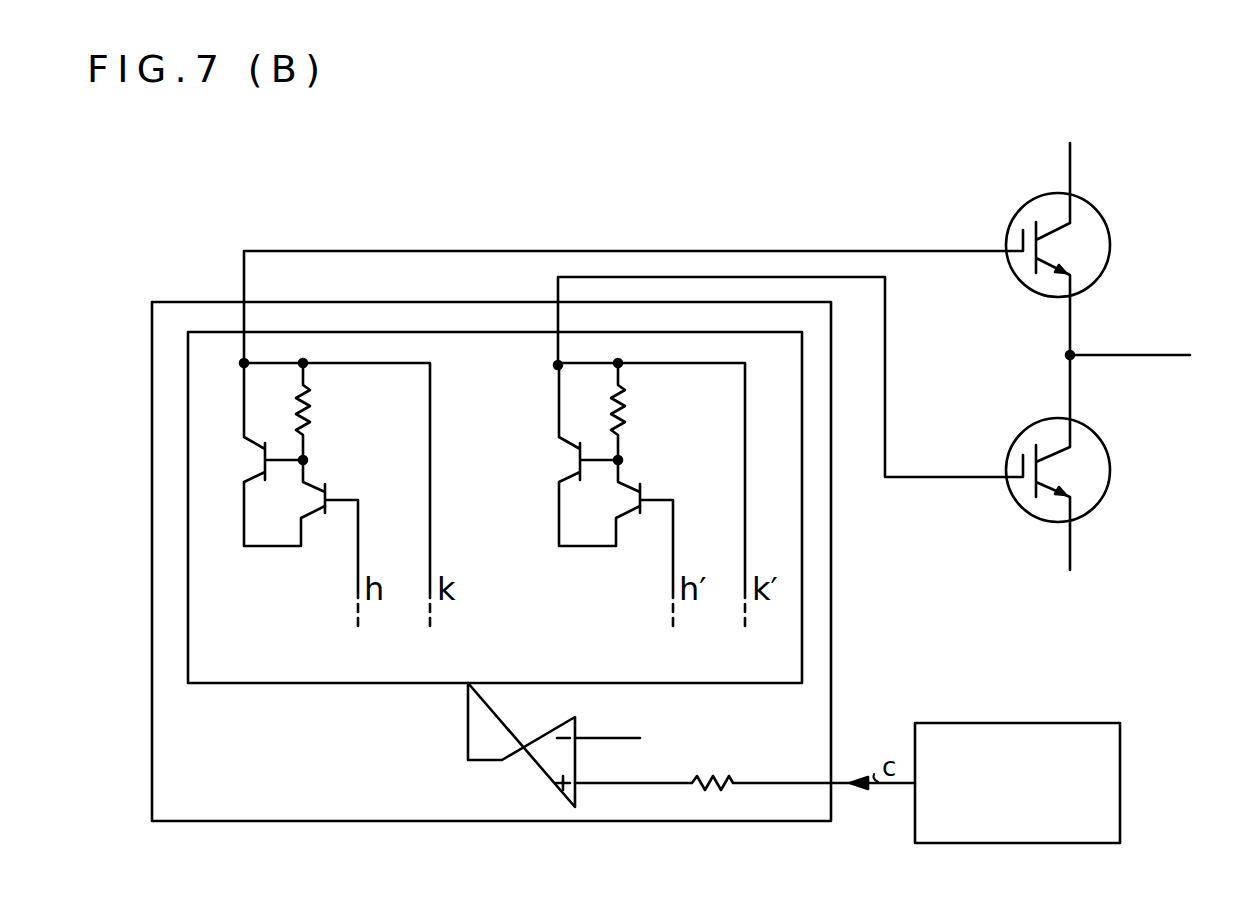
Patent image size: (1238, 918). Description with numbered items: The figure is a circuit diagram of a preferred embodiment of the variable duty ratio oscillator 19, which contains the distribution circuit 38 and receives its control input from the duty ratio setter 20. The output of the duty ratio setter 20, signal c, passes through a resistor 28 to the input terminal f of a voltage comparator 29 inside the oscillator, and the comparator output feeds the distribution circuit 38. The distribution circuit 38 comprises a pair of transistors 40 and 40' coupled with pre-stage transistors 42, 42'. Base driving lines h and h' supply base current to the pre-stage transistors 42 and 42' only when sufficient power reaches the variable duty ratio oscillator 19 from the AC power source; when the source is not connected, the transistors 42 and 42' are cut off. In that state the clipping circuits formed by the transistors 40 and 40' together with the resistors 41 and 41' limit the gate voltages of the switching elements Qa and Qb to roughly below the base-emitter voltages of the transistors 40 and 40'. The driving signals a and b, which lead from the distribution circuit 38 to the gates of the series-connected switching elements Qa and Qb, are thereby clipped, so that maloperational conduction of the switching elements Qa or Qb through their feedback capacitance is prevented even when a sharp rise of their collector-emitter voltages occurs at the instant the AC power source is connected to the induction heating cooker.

The variable duty ratio oscillator 19 is at (250, 822).
The distribution circuit 38 is at (255, 683).
The transistor 40 is at (259, 454).
The resistor 41 is at (337, 495).
The pre-stage transistor 42 is at (327, 546).
The transistor 40' is at (574, 454).
The resistor 41' is at (652, 495).
The pre-stage transistor 42' is at (642, 546).
The voltage comparator 29 is at (527, 770).
The resistor 28 is at (715, 782).
The duty ratio setter 20 is at (1005, 722).
The driving signal a is at (246, 268).
The driving signal b is at (557, 277).
The switching element Qa is at (1096, 278).
The switching element Qb is at (1096, 505).